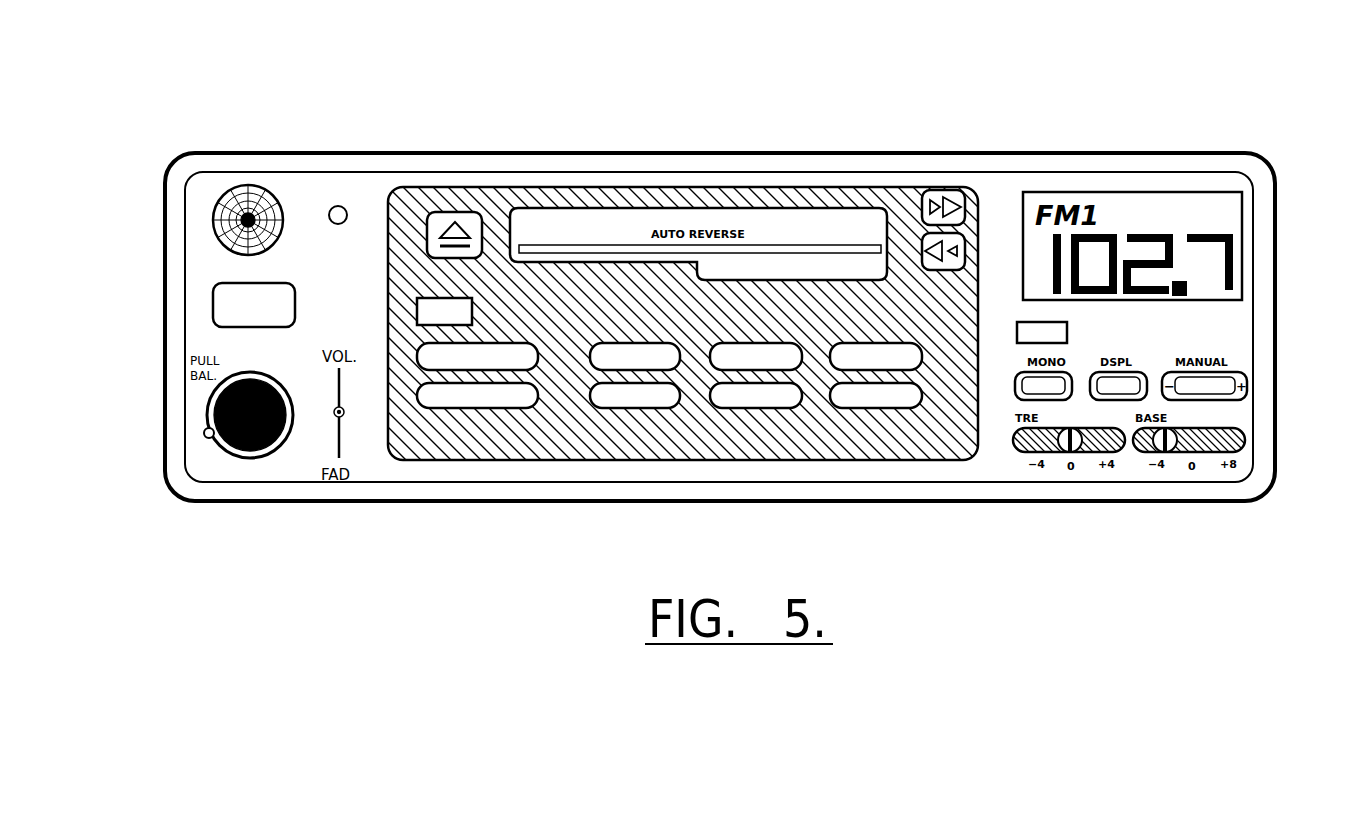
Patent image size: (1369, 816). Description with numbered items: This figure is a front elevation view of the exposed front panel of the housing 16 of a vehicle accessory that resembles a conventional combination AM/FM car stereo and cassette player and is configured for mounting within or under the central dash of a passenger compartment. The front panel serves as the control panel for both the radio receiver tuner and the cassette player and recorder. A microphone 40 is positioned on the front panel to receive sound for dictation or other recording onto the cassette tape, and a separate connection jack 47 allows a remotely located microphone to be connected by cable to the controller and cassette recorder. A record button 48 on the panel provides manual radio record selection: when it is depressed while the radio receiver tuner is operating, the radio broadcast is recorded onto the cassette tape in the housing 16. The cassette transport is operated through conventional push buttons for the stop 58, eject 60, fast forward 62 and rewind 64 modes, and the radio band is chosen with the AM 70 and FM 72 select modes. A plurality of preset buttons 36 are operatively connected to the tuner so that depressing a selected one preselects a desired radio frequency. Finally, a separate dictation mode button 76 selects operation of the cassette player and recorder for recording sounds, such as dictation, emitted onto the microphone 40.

The housing 16 is at (761, 317).
The preset buttons 36 is at (850, 397).
The microphone 40 is at (231, 165).
The connection jack 47 is at (297, 128).
The record button 48 is at (230, 280).
The stop 58 is at (481, 164).
The eject 60 is at (436, 196).
The fast forward 62 is at (985, 121).
The rewind 64 is at (991, 182).
The AM select mode 70 is at (515, 454).
The FM select mode 72 is at (441, 447).
The dictation mode button 76 is at (1035, 441).